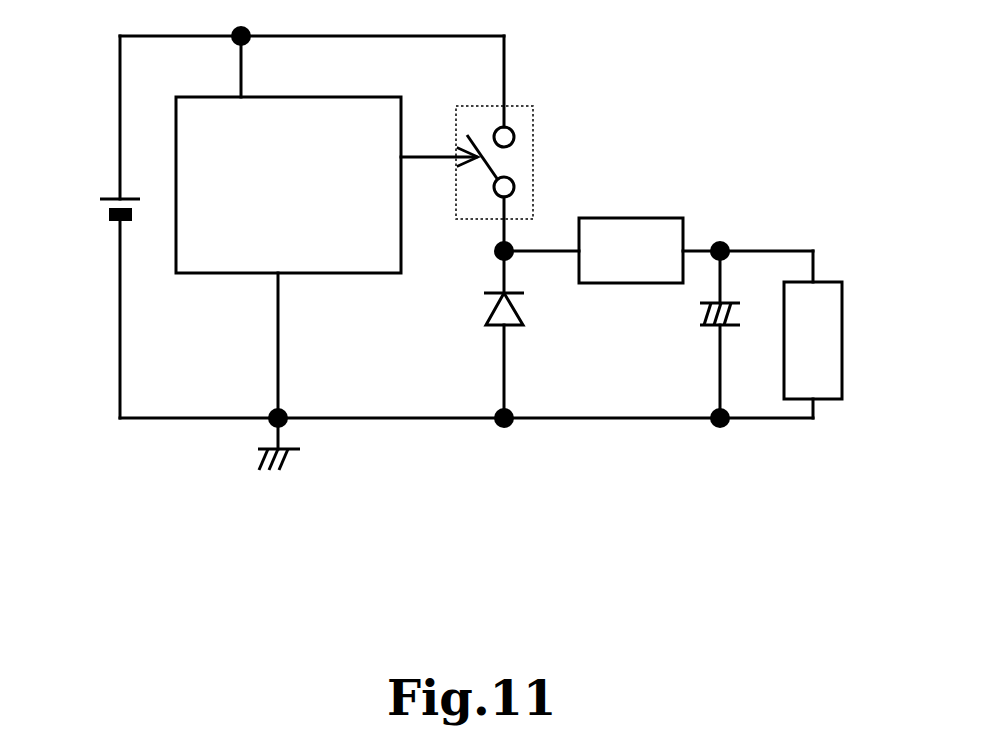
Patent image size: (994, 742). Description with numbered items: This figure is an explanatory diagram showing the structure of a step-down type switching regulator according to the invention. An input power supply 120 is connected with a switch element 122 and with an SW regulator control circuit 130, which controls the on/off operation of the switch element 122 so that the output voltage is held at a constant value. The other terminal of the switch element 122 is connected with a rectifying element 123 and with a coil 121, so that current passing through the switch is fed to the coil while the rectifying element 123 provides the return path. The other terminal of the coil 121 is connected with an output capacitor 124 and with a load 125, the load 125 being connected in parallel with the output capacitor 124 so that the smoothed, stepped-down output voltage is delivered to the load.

The input power supply 120 is at (100, 221).
The coil 121 is at (635, 210).
The switch element 122 is at (542, 157).
The rectifying element 123 is at (532, 303).
The output capacitor 124 is at (748, 282).
The load 125 is at (851, 313).
The SW regulator control circuit 130 is at (362, 283).